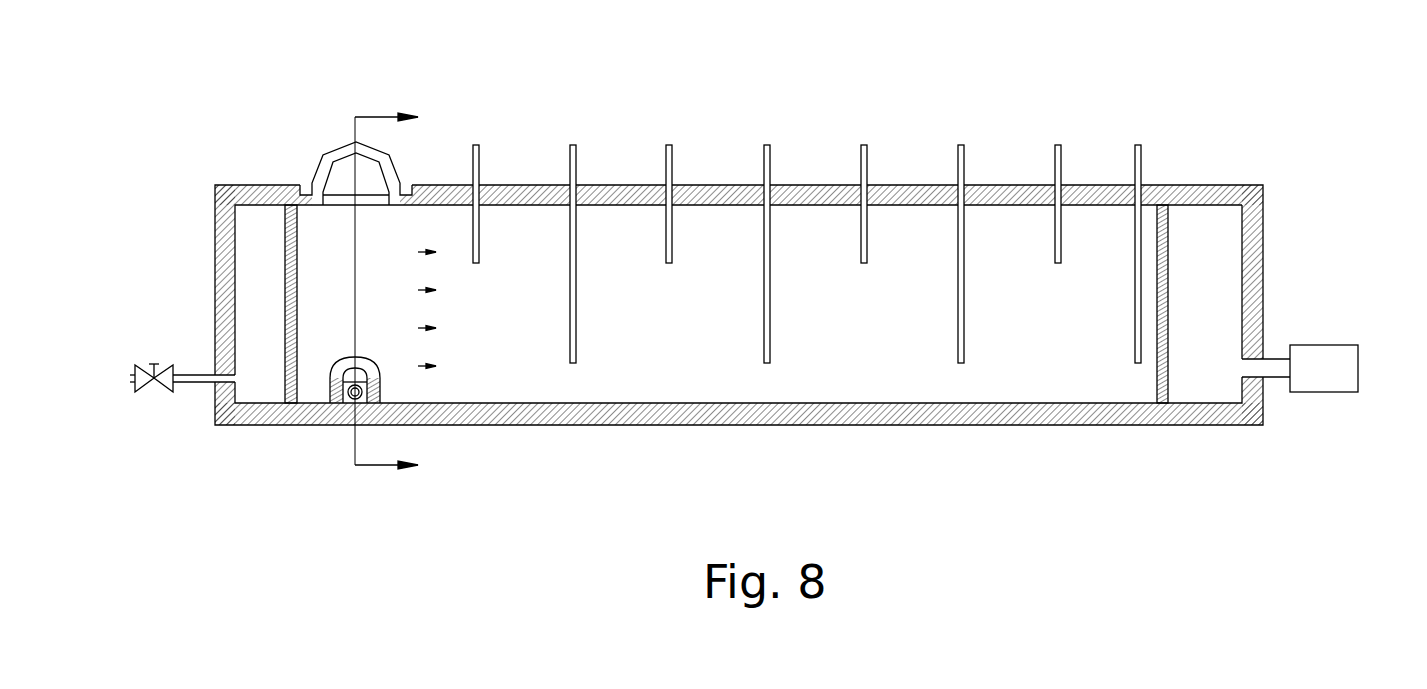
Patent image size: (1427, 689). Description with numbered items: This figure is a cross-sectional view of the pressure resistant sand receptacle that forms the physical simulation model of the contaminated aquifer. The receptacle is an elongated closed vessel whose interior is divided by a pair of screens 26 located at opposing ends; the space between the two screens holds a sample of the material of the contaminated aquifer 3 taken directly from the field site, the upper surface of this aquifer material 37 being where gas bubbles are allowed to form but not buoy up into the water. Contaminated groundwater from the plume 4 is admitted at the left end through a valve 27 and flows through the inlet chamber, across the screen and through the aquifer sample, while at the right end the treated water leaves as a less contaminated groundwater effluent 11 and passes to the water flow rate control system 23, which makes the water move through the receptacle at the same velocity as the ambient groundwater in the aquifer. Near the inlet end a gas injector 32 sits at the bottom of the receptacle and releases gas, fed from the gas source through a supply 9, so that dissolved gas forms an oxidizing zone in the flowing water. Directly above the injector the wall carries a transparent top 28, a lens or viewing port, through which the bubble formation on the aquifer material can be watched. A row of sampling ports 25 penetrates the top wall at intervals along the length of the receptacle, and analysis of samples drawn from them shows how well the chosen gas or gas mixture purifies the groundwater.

The contaminated aquifer 3 is at (739, 350).
The plume of contaminated groundwater 4 is at (197, 275).
The supply 9 is at (404, 295).
The less contaminated groundwater effluent 11 is at (1278, 264).
The water flow rate control system 23 is at (1331, 286).
The sampling ports 25 is at (480, 143).
The screens 26 is at (751, 372).
The valve 27 is at (182, 396).
The transparent top 28 is at (253, 131).
The gas injector 32 is at (237, 325).
The aquifer material 37 is at (313, 165).